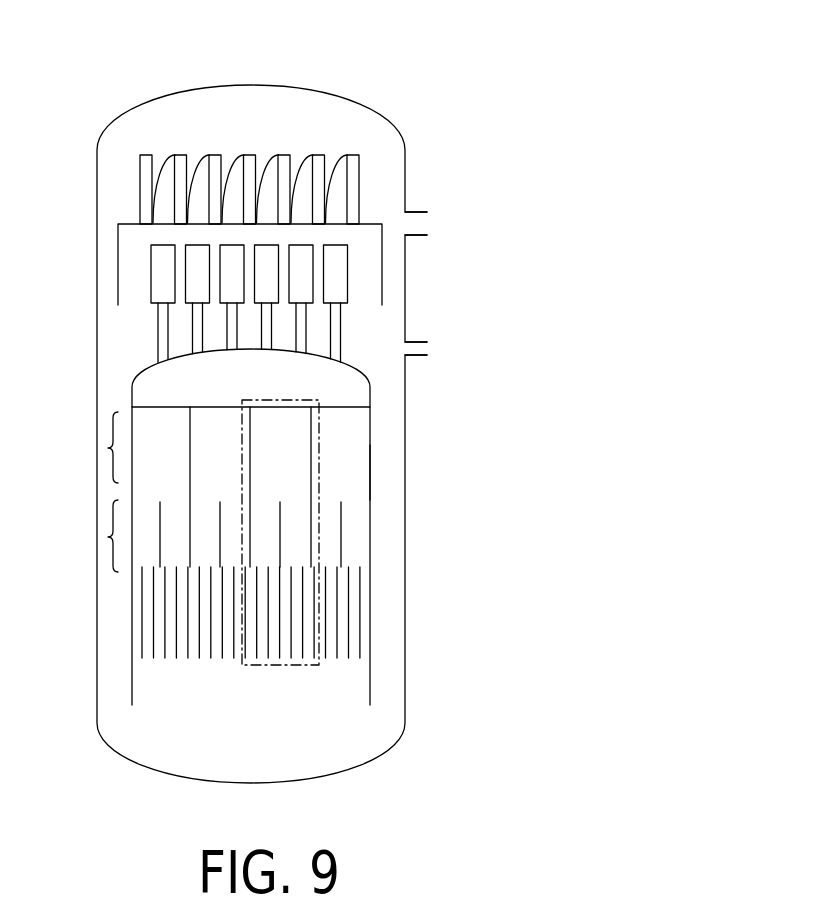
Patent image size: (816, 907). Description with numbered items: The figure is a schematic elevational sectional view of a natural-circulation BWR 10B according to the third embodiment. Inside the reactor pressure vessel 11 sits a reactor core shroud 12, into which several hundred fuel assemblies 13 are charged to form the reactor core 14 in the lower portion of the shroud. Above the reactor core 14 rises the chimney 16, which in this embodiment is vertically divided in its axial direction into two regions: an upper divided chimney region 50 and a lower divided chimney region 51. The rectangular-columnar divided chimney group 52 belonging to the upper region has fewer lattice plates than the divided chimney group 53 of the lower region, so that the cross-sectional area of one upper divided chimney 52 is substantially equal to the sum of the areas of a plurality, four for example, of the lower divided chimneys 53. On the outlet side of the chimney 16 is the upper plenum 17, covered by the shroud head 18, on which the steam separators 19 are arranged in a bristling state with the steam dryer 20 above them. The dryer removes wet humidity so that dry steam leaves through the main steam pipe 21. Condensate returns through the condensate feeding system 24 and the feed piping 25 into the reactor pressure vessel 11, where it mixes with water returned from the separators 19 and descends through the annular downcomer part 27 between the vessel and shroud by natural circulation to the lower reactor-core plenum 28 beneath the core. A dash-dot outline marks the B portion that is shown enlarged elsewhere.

The natural-circulation BWR 10B is at (376, 90).
The reactor pressure vessel 11 is at (407, 152).
The reactor core shroud 12 is at (372, 568).
The fuel assemblies 13 is at (360, 603).
The reactor core 14 is at (129, 626).
The chimney 16 is at (157, 489).
The upper plenum 17 is at (296, 378).
The shroud head 18 is at (355, 366).
The steam separators 19 is at (130, 261).
The steam dryer 20 is at (120, 186).
The main steam pipe 21 is at (432, 209).
The condensate feeding system 24 is at (432, 336).
The feed piping 25 is at (413, 357).
The downcomer part 27 is at (388, 461).
The lower reactor-core plenum 28 is at (296, 714).
The upper divided chimney region 50 is at (109, 448).
The lower divided chimney region 51 is at (109, 537).
The upper divided chimney group 52 is at (250, 438).
The lower divided chimney group 53 is at (280, 520).
The B portion B is at (322, 649).